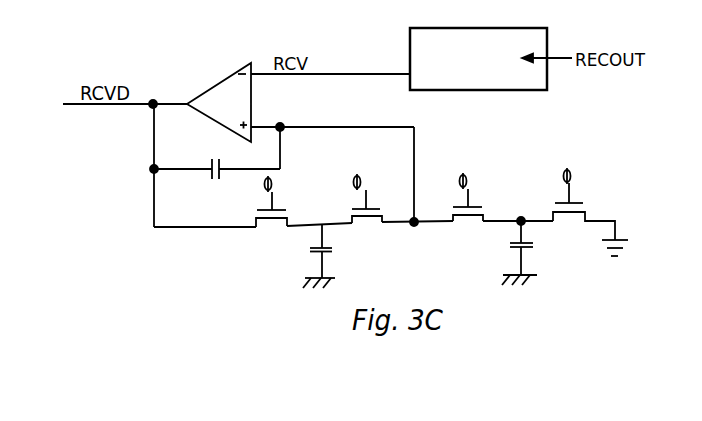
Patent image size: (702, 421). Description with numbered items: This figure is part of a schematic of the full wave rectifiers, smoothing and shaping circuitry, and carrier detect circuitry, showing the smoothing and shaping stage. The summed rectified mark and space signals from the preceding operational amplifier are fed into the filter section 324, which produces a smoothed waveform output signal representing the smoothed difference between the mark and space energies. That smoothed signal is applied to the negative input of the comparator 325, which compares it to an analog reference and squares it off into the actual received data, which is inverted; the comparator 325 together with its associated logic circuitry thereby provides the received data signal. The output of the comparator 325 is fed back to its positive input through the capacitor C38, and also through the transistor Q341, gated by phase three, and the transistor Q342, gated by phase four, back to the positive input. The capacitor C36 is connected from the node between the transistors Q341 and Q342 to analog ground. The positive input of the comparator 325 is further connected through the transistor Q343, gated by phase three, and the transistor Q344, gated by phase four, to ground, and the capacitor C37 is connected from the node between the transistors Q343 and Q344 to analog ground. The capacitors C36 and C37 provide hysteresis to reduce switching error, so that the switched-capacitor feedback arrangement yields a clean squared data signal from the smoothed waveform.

The filter section 324 is at (538, 30).
The comparator 325 is at (230, 77).
The capacitor C38 is at (215, 153).
The capacitor C36 is at (302, 256).
The capacitor C37 is at (536, 253).
The transistor Q341 is at (295, 201).
The transistor Q342 is at (377, 209).
The transistor Q343 is at (495, 197).
The transistor Q344 is at (596, 212).